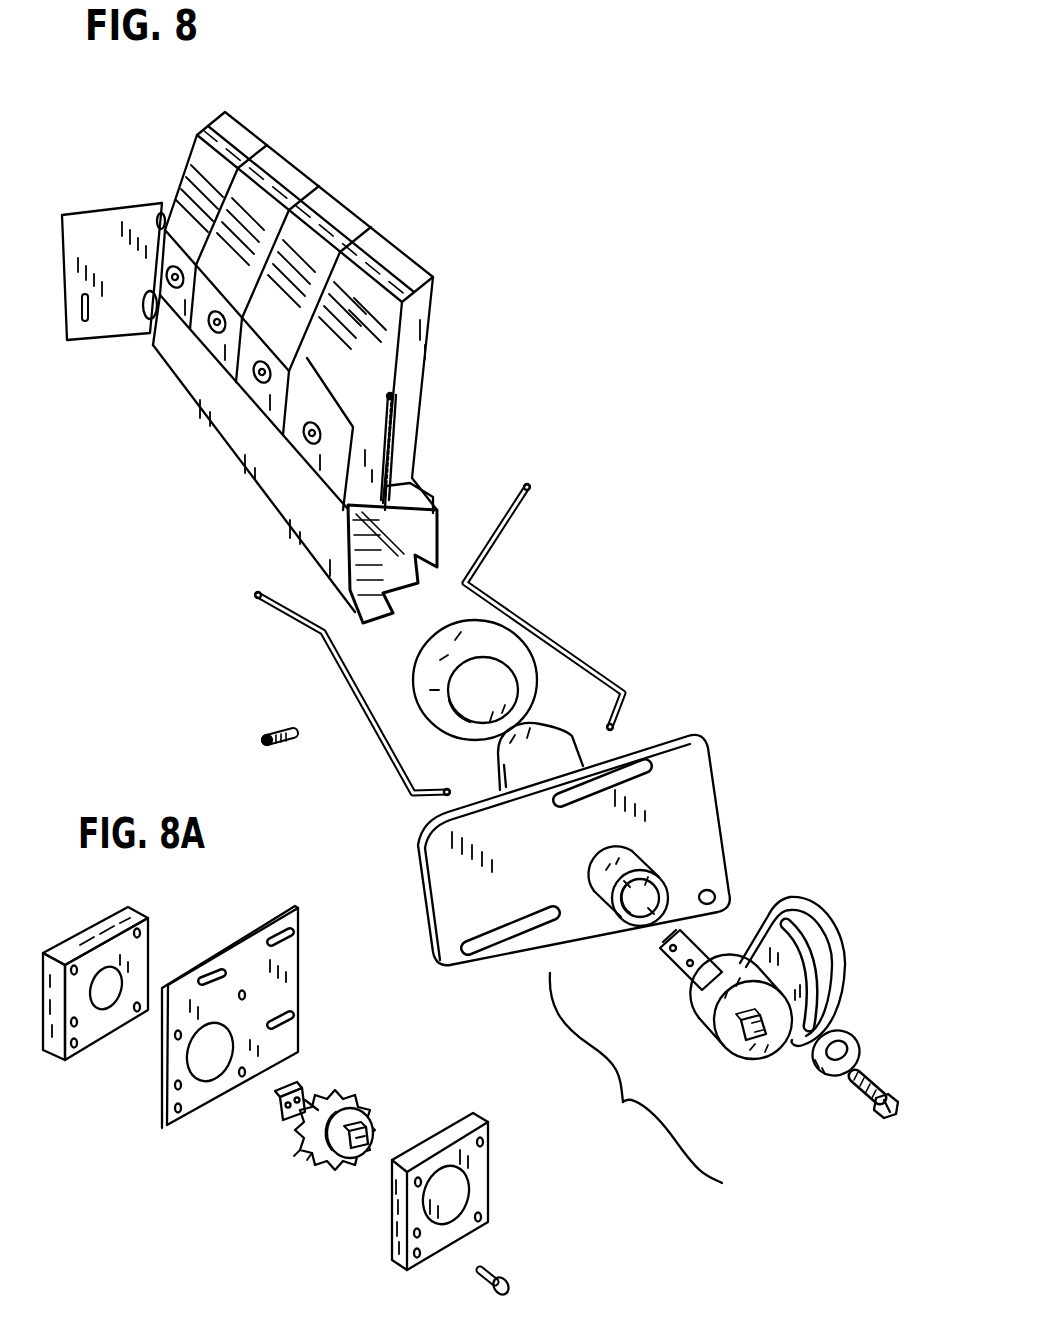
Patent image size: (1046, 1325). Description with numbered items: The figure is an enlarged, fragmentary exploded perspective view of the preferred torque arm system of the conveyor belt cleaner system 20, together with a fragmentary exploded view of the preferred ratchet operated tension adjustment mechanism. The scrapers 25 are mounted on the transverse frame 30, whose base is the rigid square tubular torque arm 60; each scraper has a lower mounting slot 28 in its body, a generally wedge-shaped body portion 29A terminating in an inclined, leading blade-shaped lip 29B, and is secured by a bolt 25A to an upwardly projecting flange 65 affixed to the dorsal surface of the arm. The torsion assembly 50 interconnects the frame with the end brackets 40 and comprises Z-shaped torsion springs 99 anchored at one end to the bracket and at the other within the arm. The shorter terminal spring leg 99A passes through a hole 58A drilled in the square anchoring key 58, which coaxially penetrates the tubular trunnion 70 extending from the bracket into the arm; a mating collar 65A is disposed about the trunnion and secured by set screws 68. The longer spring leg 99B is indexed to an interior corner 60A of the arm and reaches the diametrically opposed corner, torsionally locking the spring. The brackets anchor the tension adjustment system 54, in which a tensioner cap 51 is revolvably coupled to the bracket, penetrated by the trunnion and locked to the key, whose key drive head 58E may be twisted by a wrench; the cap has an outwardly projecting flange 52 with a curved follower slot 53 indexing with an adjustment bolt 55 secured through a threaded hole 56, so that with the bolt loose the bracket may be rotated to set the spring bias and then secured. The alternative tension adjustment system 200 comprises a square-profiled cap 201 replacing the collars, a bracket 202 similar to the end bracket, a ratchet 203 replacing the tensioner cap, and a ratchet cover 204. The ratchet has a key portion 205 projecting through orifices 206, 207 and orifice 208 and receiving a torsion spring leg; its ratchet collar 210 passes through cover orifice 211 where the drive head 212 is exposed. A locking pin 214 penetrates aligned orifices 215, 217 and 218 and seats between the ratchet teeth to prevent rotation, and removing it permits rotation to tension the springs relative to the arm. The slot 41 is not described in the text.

In FIG. 8, the torque arm conveyor belt cleaner system 20 is at (536, 242).
In FIG. 8, the scraper 25 is at (416, 264).
In FIG. 8, the bolt 25A is at (308, 433).
In FIG. 8, the lower mounting slot 28 is at (392, 395).
In FIG. 8, the wedge-shaped body portion 29A is at (262, 197).
In FIG. 8, the leading blade-shaped lip 29B is at (350, 203).
In FIG. 8, the frame 30 is at (183, 414).
In FIG. 8, the end bracket 40 is at (78, 335).
In FIG. 8, the slot 41 is at (655, 763).
In FIG. 8, the torsion assembly 50 is at (722, 619).
In FIG. 8, the tensioner cap 51 is at (697, 1023).
In FIG. 8, the flange 52 is at (787, 905).
In FIG. 8, the follower slot 53 is at (807, 942).
In FIG. 8, the tension adjustment system 54 is at (636, 1078).
In FIG. 8, the adjustment bolt 55 is at (860, 1084).
In FIG. 8, the threaded hole 56 is at (714, 892).
In FIG. 8, the anchoring key 58 is at (700, 977).
In FIG. 8, the hole 58A is at (667, 942).
In FIG. 8, the key drive head 58E is at (748, 1052).
In FIG. 8, the torque arm 60 is at (283, 492).
In FIG. 8, the interior corner 60A is at (420, 508).
In FIG. 8, the flange 65 is at (398, 412).
In FIG. 8, the mating collar 65A is at (148, 318).
In FIG. 8, the set screw 68 is at (265, 740).
In FIG. 8, the trunnion 70 is at (497, 745).
In FIG. 8, the torsion spring 99 is at (583, 663).
In FIG. 8, the terminal spring leg 99A is at (614, 722).
In FIG. 8, the spring leg 99B is at (505, 522).
In FIG. 8A, the tension adjustment system 200 is at (163, 1222).
In FIG. 8A, the square-profiled cap 201 is at (150, 908).
In FIG. 8A, the bracket 202 is at (308, 985).
In FIG. 8A, the ratchet 203 is at (375, 1098).
In FIG. 8A, the ratchet cover 204 is at (500, 1164).
In FIG. 8A, the key portion 205 is at (310, 1090).
In FIG. 8A, the orifice 206 is at (195, 1058).
In FIG. 8A, the orifice 207 is at (108, 994).
In FIG. 8A, the orifice 208 is at (300, 1093).
In FIG. 8A, the ratchet collar 210 is at (317, 1160).
In FIG. 8A, the cover orifice 211 is at (460, 1203).
In FIG. 8A, the drive head 212 is at (367, 1135).
In FIG. 8A, the locking pin 214 is at (498, 1272).
In FIG. 8A, the orifice 215 is at (398, 1222).
In FIG. 8A, the orifice 217 is at (183, 1087).
In FIG. 8A, the orifice 218 is at (77, 1024).